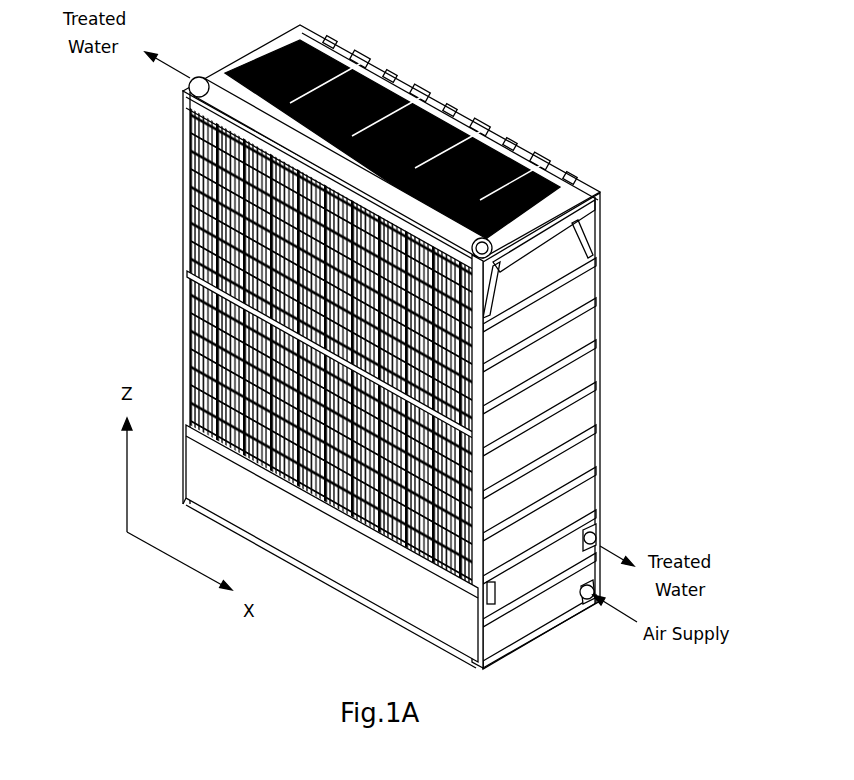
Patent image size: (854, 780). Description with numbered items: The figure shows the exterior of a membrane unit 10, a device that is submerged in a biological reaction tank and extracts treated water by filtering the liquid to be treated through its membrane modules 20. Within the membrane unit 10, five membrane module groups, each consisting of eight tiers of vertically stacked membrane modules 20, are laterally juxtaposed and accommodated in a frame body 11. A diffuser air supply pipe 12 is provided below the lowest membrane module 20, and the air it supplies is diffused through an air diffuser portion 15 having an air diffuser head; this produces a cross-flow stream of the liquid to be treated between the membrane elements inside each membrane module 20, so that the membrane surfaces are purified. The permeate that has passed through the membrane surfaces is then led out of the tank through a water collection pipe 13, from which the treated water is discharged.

The membrane unit 10 is at (513, 103).
The frame body 11 is at (598, 325).
The diffuser air supply pipe 12 is at (590, 602).
The water collection pipe 13 is at (196, 78).
The air diffuser portion 15 is at (370, 580).
The membrane module 20 is at (196, 135).